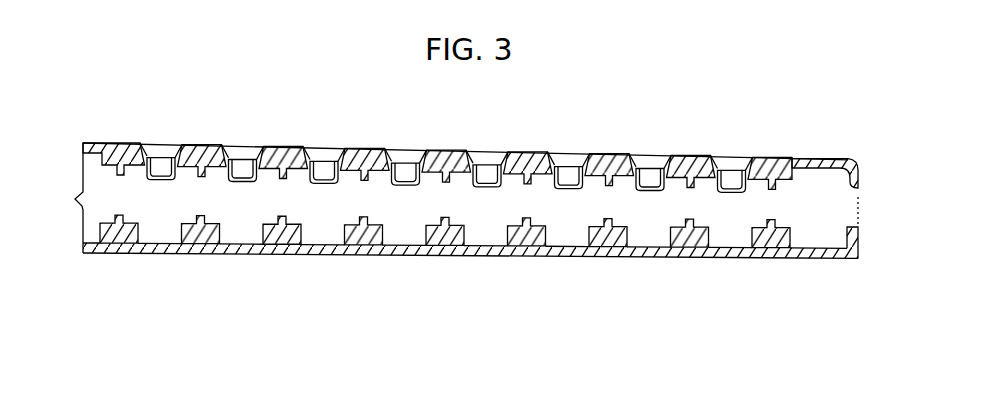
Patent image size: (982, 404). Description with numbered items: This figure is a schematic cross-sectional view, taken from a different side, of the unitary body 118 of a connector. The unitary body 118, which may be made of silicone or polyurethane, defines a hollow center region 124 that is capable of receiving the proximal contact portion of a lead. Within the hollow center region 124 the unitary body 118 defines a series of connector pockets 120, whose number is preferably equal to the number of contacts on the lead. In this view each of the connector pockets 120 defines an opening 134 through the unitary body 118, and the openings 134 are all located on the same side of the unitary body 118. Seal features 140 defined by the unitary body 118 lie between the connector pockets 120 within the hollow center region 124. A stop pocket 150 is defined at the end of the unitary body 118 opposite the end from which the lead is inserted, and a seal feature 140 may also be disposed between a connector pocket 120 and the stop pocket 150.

The unitary body 118 is at (780, 168).
The connector pockets 120 is at (248, 202).
The hollow center region 124 is at (107, 195).
The opening 134 is at (247, 168).
The seal features 140 is at (120, 202).
The stop pocket 150 is at (822, 213).